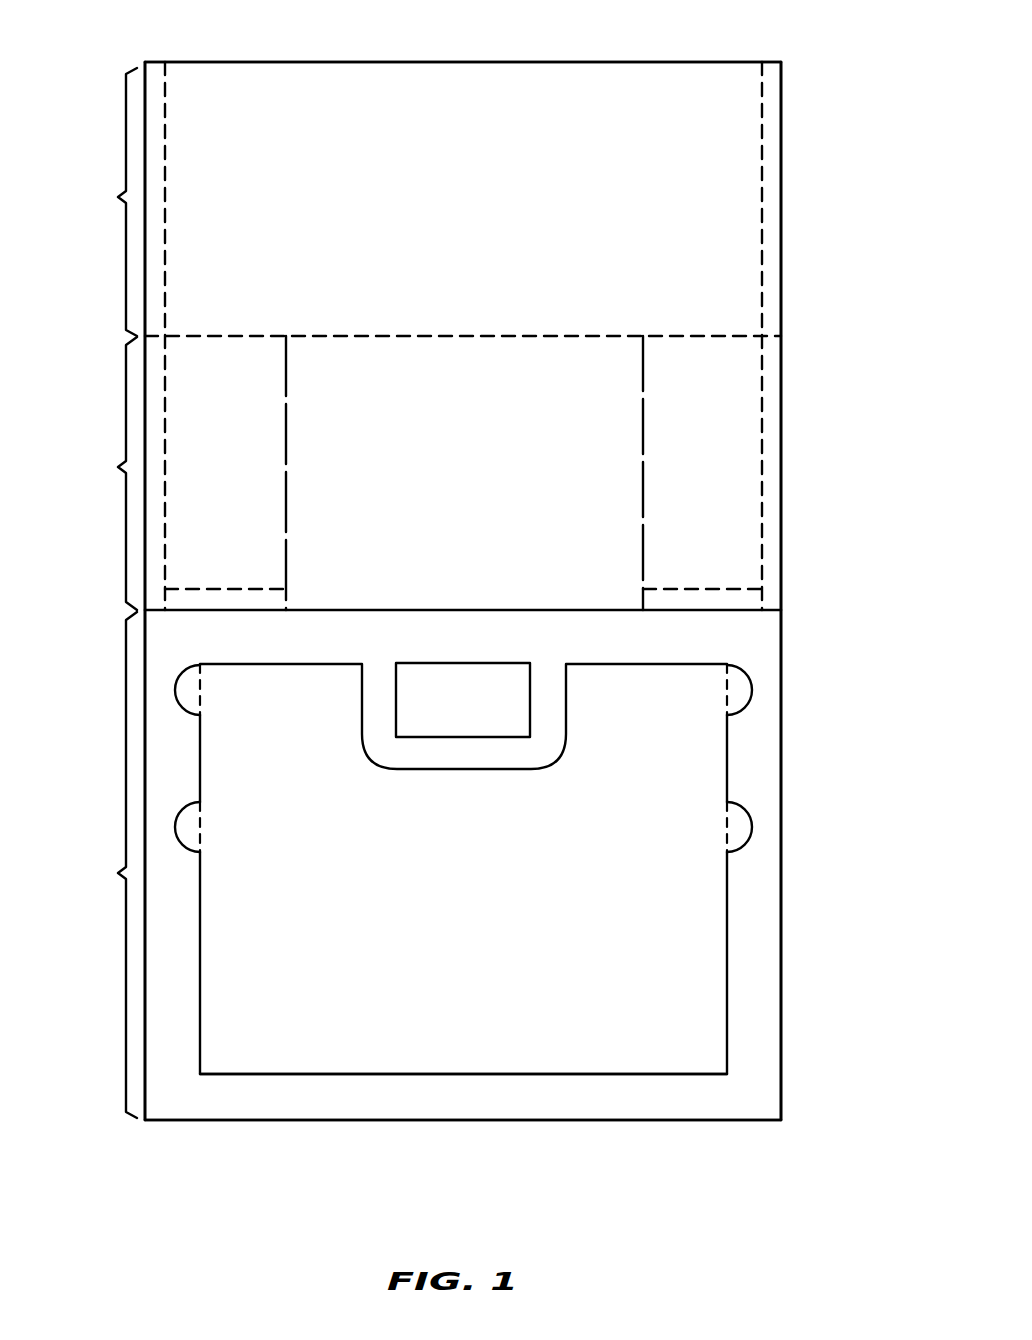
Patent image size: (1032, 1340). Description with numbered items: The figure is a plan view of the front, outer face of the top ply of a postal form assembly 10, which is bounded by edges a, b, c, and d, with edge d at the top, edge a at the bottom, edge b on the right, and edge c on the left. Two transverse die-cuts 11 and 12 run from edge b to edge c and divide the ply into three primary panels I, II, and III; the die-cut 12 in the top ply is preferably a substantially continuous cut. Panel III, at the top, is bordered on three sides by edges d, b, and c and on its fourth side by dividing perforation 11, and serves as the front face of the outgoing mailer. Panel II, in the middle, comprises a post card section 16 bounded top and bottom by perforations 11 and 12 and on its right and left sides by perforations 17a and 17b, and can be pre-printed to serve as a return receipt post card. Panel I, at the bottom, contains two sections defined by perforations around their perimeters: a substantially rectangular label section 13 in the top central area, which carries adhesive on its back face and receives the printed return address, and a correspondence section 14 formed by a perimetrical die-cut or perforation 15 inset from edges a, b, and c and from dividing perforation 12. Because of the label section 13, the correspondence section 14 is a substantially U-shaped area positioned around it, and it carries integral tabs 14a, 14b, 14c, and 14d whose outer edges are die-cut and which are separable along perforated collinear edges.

The assembly 10 is at (818, 224).
The transverse die-cut 11 is at (707, 336).
The transverse die-cut 12 is at (710, 608).
The label section 13 is at (470, 684).
The correspondence section 14 is at (622, 1016).
The tab 14a is at (740, 690).
The tab 14b is at (740, 827).
The tab 14c is at (185, 827).
The tab 14d is at (185, 690).
The perimetrical die-cut or perforation 15 is at (255, 1075).
The post card section 16 is at (562, 498).
The perforation 17a is at (643, 437).
The perforation 17b is at (286, 430).
The edge a is at (688, 1120).
The edge b is at (782, 938).
The edge c is at (145, 972).
The edge d is at (565, 62).
The Panel I is at (118, 865).
The Panel II is at (116, 473).
The Panel III is at (113, 202).